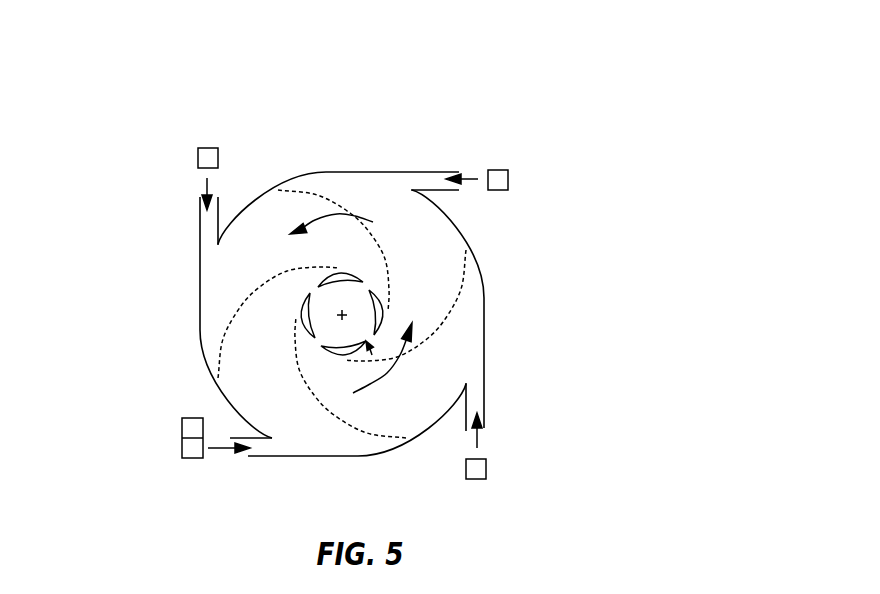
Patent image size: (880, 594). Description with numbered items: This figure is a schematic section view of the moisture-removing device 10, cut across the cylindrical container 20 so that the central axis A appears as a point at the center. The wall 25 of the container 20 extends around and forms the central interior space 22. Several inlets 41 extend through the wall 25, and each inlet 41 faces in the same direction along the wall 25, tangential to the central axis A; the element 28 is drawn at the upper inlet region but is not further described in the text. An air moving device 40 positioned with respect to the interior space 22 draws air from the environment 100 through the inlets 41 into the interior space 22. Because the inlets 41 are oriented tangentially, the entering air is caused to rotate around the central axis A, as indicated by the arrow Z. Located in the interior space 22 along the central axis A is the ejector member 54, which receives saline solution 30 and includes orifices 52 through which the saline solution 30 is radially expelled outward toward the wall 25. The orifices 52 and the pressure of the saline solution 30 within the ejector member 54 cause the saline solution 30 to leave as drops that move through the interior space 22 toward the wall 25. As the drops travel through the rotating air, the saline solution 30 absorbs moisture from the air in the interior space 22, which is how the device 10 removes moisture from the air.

The device 10 is at (168, 104).
The environment 100 is at (63, 359).
The container 20 is at (480, 282).
The interior space 22 is at (455, 353).
The wall 25 is at (458, 228).
The inlet channel wall 28 is at (430, 178).
The saline solution 30 is at (304, 337).
The air moving device 40 is at (198, 156).
The inlets 41 is at (205, 226).
The orifices 52 is at (303, 281).
The ejector member 54 is at (382, 318).
The central axis A is at (342, 315).
The arrow Z is at (330, 214).